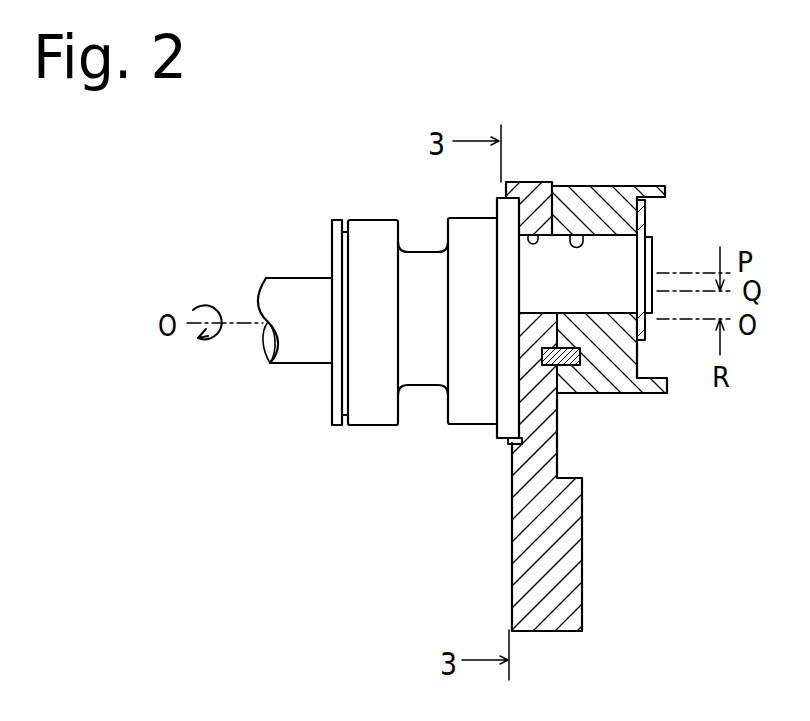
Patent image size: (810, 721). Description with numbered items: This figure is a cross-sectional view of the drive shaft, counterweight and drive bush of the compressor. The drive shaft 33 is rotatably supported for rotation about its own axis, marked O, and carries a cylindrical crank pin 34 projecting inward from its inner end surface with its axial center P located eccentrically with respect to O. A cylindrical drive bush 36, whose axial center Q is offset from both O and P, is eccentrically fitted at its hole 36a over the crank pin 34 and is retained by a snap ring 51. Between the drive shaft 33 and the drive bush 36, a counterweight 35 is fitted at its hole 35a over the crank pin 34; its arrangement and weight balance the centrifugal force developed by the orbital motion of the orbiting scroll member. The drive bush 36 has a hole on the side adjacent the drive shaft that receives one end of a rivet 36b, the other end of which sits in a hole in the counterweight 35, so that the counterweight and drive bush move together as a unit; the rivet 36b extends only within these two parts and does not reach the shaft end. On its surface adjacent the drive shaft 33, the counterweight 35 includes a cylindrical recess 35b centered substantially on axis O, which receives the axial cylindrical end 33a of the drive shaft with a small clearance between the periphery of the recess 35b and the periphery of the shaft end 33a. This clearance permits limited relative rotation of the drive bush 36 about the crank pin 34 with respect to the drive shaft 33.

The drive shaft 33 is at (293, 298).
The axial cylindrical end of the drive shaft 33a is at (505, 440).
The crank pin 34 is at (605, 298).
The counterweight 35 is at (573, 573).
The hole of the counterweight 35a is at (535, 182).
The cylindrical recess of the counterweight 35b is at (512, 475).
The drive bush 36 is at (620, 193).
The hole of the drive bush 36a is at (577, 187).
The rivet 36b is at (580, 367).
The snap ring 51 is at (641, 220).